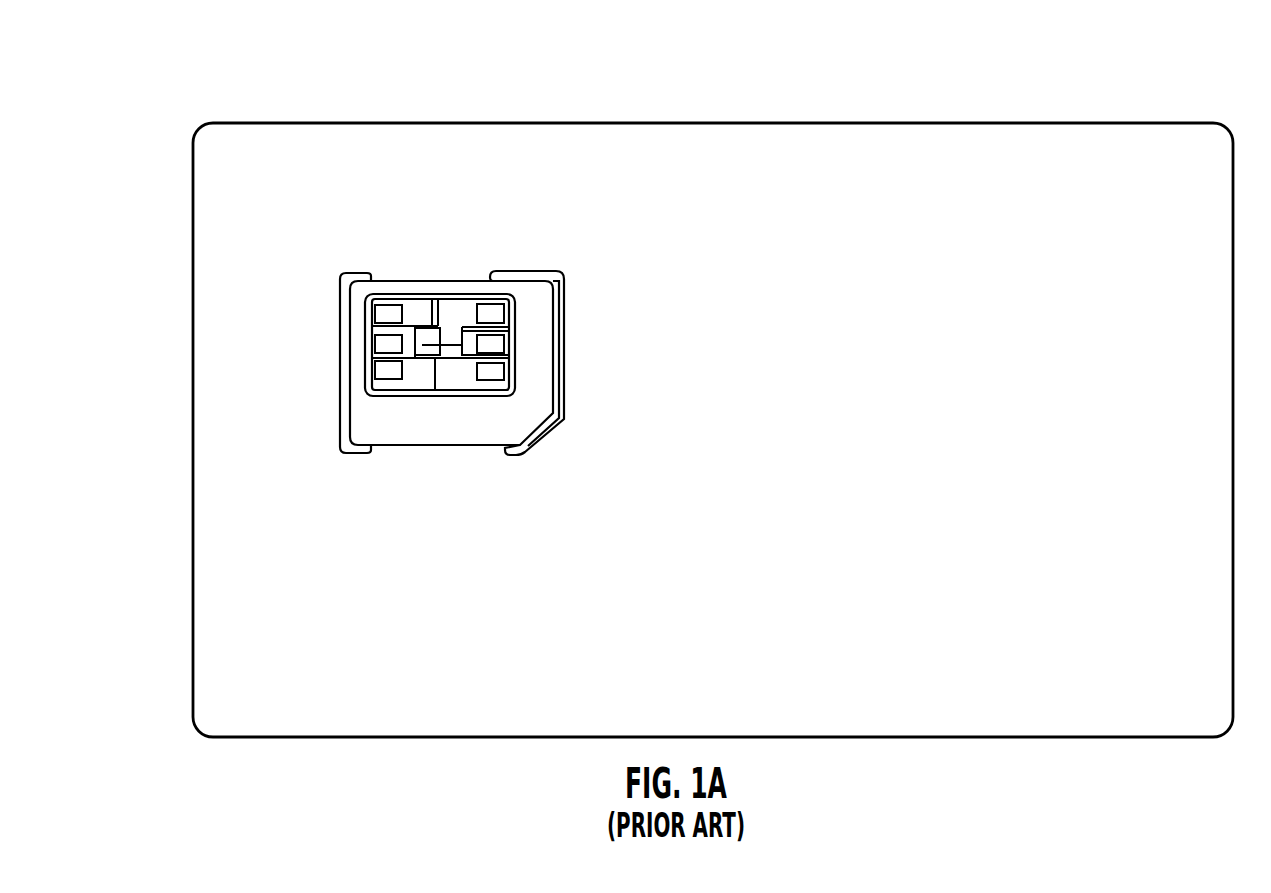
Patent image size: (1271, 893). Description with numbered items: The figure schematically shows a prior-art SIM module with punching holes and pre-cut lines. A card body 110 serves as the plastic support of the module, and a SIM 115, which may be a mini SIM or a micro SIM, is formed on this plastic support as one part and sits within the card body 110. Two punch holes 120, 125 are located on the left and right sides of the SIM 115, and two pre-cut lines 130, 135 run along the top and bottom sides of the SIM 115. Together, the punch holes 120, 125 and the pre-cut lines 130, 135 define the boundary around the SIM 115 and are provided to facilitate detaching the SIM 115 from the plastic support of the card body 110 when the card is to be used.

The card body 110 is at (422, 142).
The SIM 115 is at (537, 307).
The punch hole 120 is at (563, 410).
The punch hole 125 is at (348, 337).
The pre-cut line 130 is at (412, 282).
The pre-cut line 135 is at (433, 445).